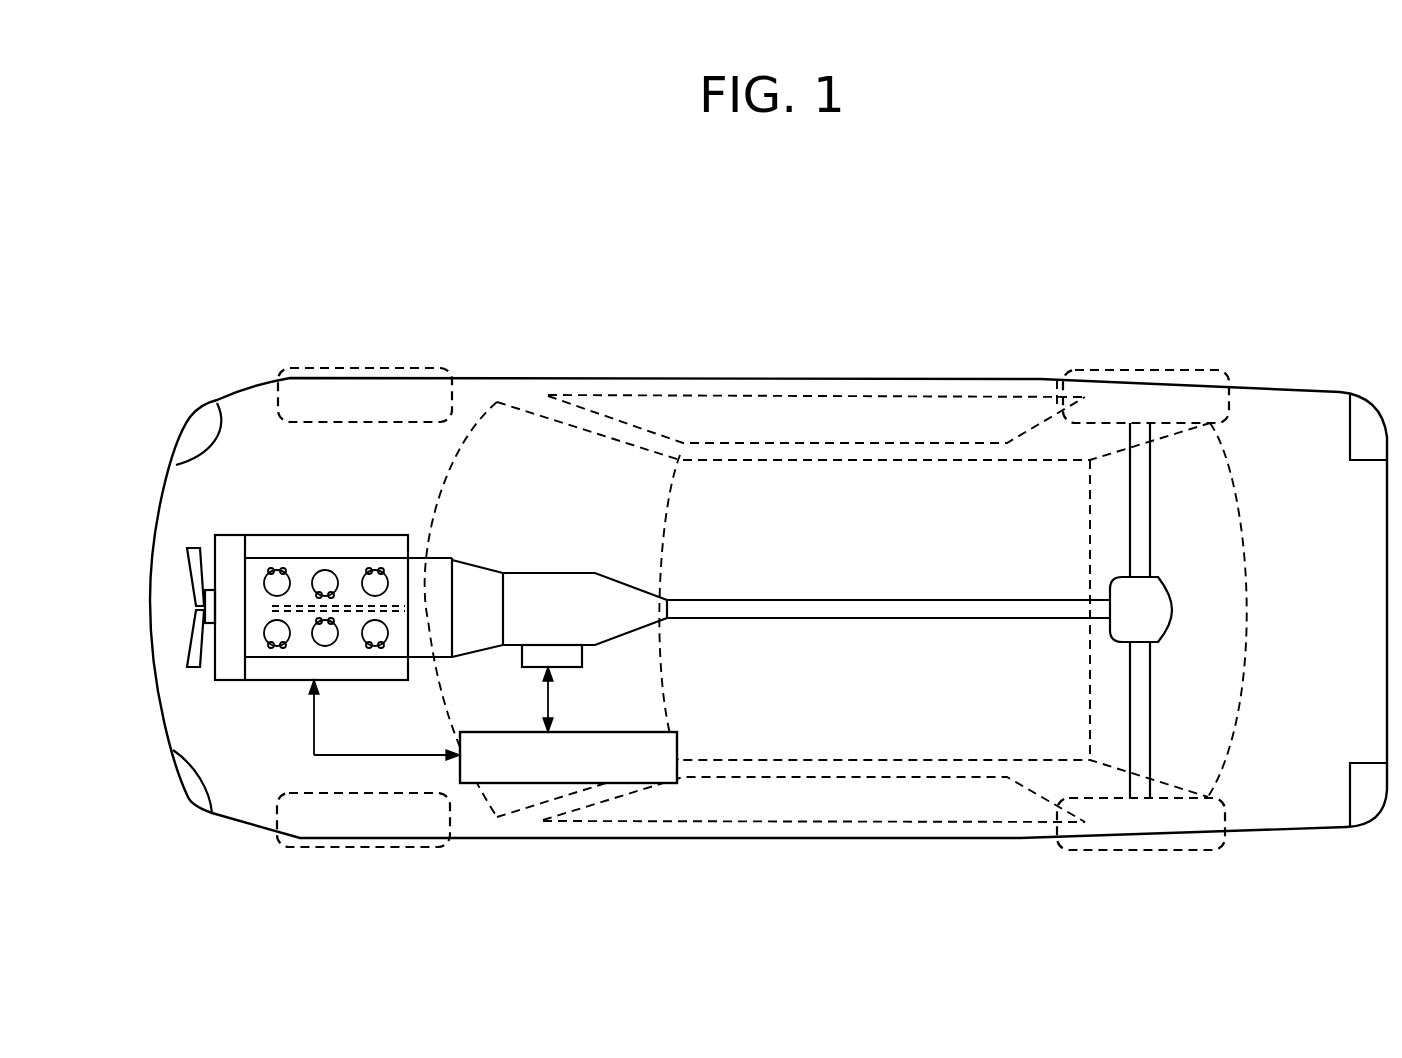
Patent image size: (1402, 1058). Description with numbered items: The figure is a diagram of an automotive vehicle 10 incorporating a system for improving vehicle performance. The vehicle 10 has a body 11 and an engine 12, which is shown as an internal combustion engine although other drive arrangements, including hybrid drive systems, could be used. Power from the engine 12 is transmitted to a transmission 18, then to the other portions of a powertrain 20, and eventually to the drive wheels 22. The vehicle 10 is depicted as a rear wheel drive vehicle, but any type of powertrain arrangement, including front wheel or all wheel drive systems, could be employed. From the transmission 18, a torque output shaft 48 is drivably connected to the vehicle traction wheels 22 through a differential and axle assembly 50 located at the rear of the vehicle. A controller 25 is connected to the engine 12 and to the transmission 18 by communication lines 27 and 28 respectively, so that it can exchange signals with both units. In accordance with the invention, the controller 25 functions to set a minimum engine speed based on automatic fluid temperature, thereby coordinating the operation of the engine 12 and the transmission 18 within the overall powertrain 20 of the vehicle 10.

The automotive vehicle 10 is at (712, 240).
The body 11 is at (945, 378).
The engine 12 is at (318, 529).
The transmission 18 is at (503, 573).
The powertrain 20 is at (772, 598).
The drive wheels 22 is at (1145, 367).
The controller 25 is at (677, 743).
The communication line 27 is at (337, 755).
The communication line 28 is at (543, 697).
The torque output shaft 48 is at (850, 598).
The differential and axle assembly 50 is at (1167, 582).